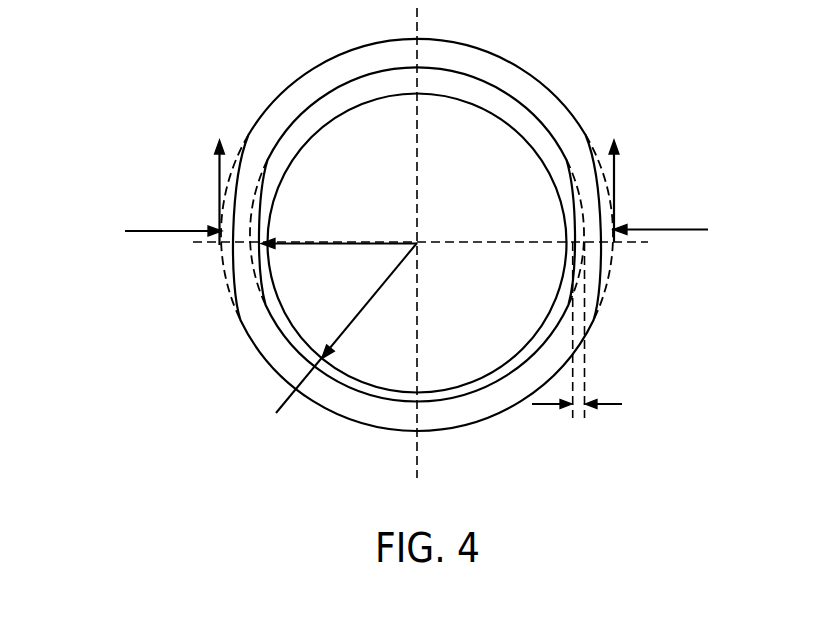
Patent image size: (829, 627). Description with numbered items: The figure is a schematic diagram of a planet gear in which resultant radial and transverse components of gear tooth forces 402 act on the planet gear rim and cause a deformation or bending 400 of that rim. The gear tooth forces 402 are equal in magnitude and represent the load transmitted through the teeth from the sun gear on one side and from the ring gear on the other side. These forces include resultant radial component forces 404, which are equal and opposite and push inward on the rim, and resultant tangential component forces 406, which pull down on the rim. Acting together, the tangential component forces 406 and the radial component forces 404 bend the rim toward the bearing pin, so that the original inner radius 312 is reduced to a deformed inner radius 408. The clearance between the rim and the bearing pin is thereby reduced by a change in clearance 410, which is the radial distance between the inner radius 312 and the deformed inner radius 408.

The deformation or bending of planet gear rim 400 is at (207, 252).
The resultant radial and transverse components of gear tooth forces 402 is at (160, 167).
The resultant radial component forces 404 is at (135, 228).
The resultant tangential component forces 406 is at (217, 172).
The deformed inner radius 408 is at (261, 244).
The change in clearance 410 is at (613, 402).
The inner radius 312 is at (275, 412).